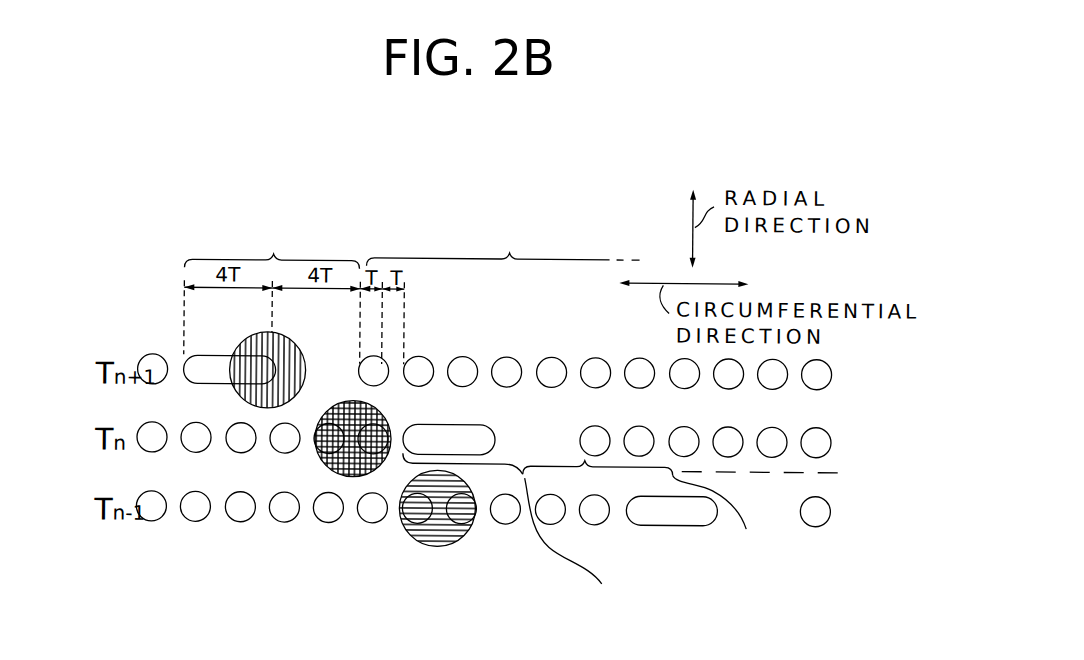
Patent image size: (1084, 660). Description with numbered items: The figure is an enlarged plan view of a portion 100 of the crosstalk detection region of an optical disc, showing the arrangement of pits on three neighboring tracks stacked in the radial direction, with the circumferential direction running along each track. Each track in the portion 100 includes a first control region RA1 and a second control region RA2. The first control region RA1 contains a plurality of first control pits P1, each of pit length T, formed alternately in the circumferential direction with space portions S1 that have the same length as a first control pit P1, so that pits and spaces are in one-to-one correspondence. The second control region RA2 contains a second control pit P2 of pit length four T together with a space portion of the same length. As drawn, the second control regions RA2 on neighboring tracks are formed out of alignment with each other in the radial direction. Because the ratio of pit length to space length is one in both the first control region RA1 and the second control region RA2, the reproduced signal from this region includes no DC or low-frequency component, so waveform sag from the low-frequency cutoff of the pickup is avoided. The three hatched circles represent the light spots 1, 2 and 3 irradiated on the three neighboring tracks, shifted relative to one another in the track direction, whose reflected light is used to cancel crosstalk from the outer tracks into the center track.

The portion of crosstalk detection region 100 is at (430, 210).
The light spot 1 is at (419, 543).
The light spot 2 is at (322, 465).
The light spot 3 is at (240, 398).
The first control pit P1 is at (372, 387).
The second control pit P2 is at (204, 358).
The space portion S1 is at (395, 368).
The first control region RA1 is at (604, 393).
The second control region RA2 is at (411, 419).